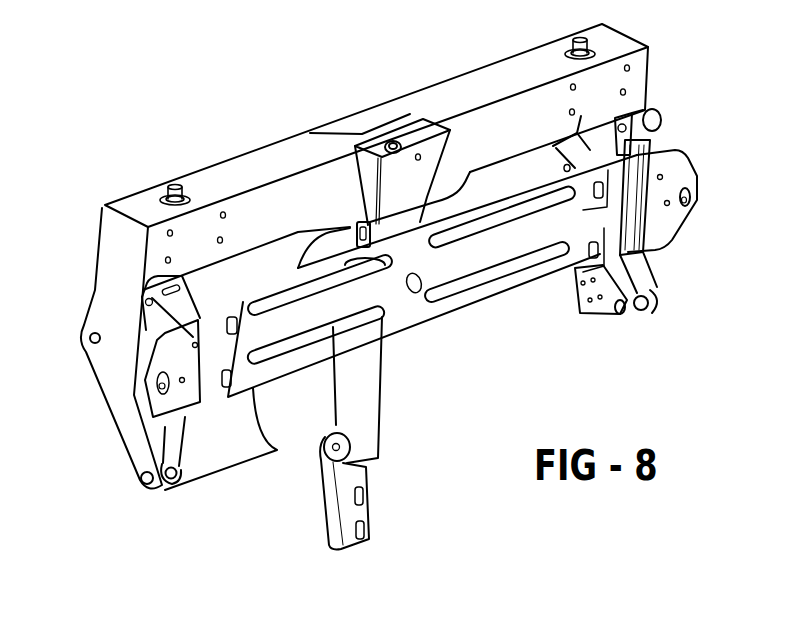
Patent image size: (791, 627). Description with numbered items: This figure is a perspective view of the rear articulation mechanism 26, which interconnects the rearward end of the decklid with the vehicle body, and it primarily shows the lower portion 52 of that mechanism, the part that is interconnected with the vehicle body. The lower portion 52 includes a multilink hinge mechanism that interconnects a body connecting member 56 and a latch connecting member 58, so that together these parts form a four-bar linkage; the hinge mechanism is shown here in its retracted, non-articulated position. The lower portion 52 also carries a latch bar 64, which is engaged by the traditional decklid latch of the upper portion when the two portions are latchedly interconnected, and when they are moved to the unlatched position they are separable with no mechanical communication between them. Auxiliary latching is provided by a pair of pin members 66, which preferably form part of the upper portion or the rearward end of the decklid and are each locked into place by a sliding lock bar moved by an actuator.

The rear articulation mechanism 26 is at (683, 103).
The lower portion 52 is at (99, 277).
The body connecting member 56 is at (412, 315).
The latch connecting member 58 is at (270, 167).
The latch bar 64 is at (396, 146).
The pin members 66 is at (177, 192).